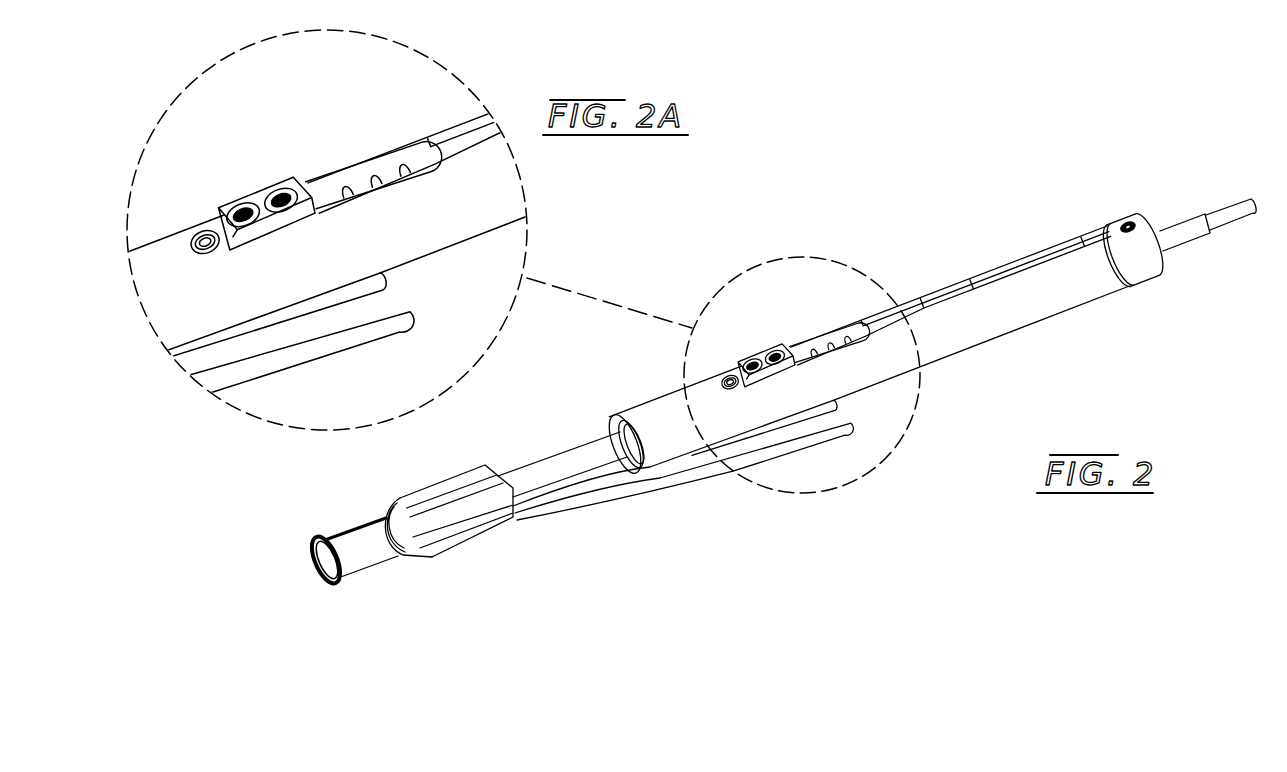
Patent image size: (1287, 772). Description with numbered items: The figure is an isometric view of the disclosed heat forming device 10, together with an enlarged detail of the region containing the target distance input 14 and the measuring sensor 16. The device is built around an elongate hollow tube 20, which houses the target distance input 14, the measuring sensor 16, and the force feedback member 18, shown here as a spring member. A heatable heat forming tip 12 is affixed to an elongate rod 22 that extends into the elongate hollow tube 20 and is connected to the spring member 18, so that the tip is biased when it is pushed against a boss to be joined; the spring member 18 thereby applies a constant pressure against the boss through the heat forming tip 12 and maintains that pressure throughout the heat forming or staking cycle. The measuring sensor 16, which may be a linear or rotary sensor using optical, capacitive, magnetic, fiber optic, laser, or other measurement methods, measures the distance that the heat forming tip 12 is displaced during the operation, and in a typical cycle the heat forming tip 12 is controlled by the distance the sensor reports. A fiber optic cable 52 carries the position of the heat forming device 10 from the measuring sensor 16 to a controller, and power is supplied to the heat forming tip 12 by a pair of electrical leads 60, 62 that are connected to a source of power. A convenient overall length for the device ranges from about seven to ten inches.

In FIG. 2, the heat forming device 10 is at (1004, 170).
In FIG. 2, the heatable heat forming tip 12 is at (356, 527).
In FIG. 2, the target distance input 14 is at (788, 345).
In FIG. 2A, the target distance input 14 is at (306, 182).
In FIG. 2, the measuring sensor 16 is at (920, 297).
In FIG. 2A, the measuring sensor 16 is at (463, 132).
In FIG. 2, the force feedback member 18 is at (826, 358).
In FIG. 2A, the force feedback member 18 is at (362, 177).
In FIG. 2, the elongate hollow tube 20 is at (1027, 300).
In FIG. 2A, the elongate hollow tube 20 is at (445, 213).
In FIG. 2, the elongate rod 22 is at (577, 457).
In FIG. 2, the fiber optic cable 52 is at (1018, 257).
In FIG. 2A, the fiber optic cable 52 is at (584, 106).
In FIG. 2, the electrical lead 60 is at (836, 410).
In FIG. 2A, the electrical lead 60 is at (373, 285).
In FIG. 2, the electrical lead 62 is at (830, 440).
In FIG. 2A, the electrical lead 62 is at (400, 330).